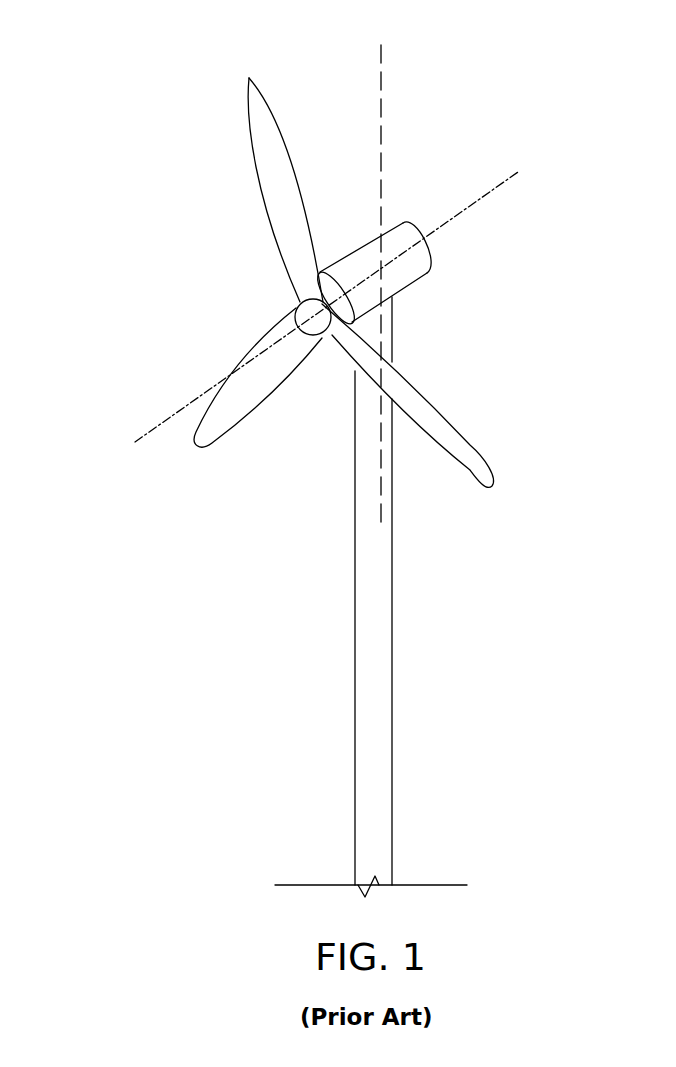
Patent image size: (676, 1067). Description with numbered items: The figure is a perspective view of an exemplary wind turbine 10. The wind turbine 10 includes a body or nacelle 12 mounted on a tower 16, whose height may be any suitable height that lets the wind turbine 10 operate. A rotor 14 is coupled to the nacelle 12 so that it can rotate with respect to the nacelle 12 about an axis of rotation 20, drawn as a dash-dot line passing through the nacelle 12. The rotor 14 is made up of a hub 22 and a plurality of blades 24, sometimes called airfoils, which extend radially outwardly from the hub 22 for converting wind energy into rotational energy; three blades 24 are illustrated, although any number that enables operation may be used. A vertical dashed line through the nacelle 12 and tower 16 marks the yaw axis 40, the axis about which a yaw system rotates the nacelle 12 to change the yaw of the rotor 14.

The wind turbine 10 is at (156, 160).
The nacelle 12 is at (403, 223).
The rotor 14 is at (326, 212).
The tower 16 is at (355, 452).
The axis of rotation 20 is at (497, 203).
The hub 22 is at (303, 305).
The blades 24 is at (250, 78).
The yaw axis 40 is at (383, 102).